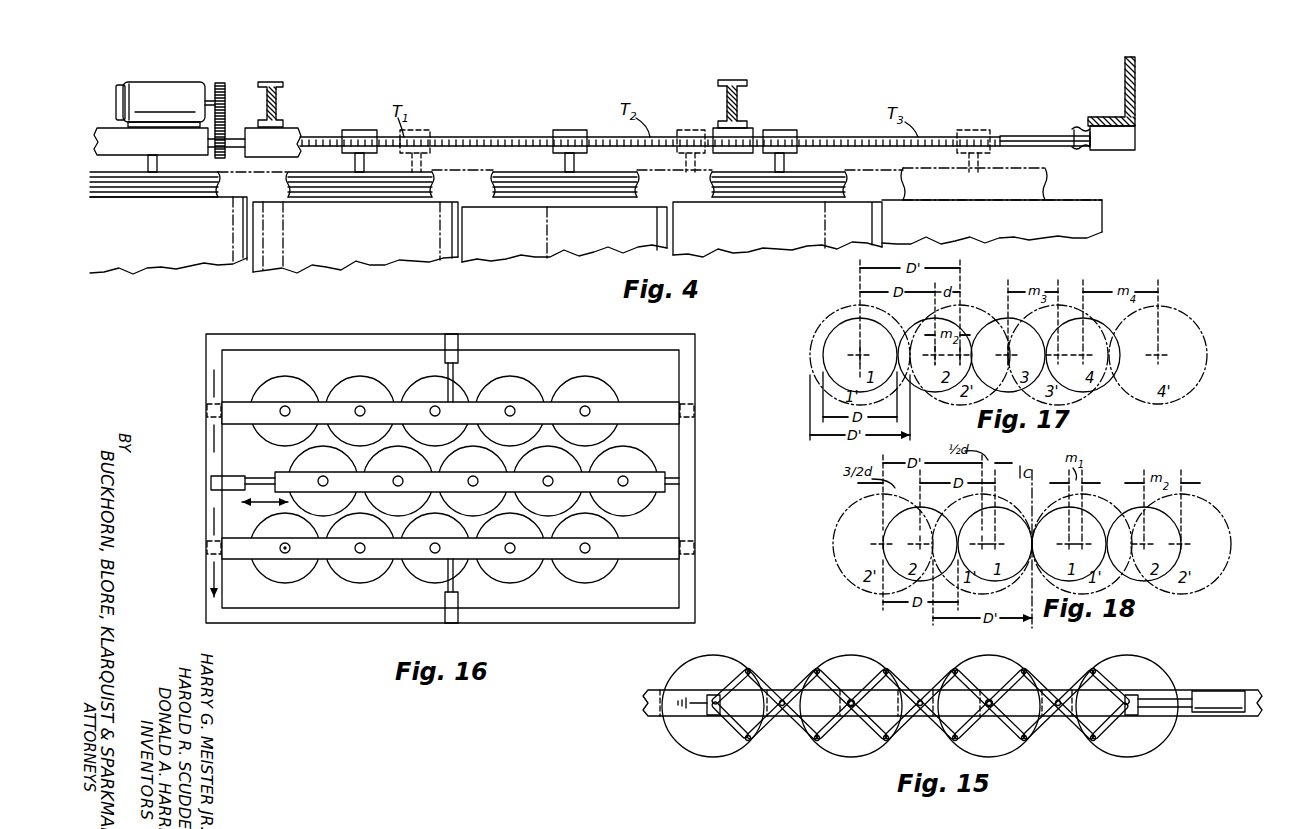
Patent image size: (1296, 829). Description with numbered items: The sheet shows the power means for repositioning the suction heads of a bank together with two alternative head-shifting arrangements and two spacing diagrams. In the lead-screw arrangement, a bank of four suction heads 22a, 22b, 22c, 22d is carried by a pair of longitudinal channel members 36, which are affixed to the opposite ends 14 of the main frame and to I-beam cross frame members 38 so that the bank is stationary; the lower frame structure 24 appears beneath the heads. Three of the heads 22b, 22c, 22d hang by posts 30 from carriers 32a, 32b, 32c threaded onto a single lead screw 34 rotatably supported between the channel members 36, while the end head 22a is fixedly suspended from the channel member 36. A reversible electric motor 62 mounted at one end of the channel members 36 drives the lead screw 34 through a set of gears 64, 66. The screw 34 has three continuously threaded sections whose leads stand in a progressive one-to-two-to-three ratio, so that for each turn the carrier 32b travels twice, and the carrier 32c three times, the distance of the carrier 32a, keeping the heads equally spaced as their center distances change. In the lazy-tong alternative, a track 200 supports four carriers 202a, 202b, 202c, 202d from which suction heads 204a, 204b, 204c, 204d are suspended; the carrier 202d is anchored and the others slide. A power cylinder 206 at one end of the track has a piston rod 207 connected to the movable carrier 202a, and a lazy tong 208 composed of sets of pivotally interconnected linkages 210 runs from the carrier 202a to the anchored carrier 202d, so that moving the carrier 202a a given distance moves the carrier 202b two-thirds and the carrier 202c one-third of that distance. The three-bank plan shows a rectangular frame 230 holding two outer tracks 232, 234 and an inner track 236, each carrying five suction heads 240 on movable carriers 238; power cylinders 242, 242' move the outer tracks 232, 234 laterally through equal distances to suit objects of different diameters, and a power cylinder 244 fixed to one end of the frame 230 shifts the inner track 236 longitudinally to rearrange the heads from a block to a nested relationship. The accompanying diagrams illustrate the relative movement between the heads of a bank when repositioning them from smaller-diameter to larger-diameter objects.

In FIG. 4, the opposite ends of the main frame 14 is at (1136, 90).
In FIG. 4, the suction head 22a is at (145, 193).
In FIG. 4, the suction head 22b is at (337, 194).
In FIG. 4, the suction head 22c is at (540, 197).
In FIG. 4, the suction head 22d is at (745, 196).
In FIG. 4, the frame 24 is at (218, 260).
In FIG. 4, the post 30 is at (786, 160).
In FIG. 4, the carrier 32a is at (355, 130).
In FIG. 4, the carrier 32b is at (566, 130).
In FIG. 4, the carrier 32c is at (783, 130).
In FIG. 4, the lead screw 34 is at (1022, 136).
In FIG. 4, the longitudinal channel member 36 is at (268, 152).
In FIG. 4, the I-beam cross frame member 38 is at (272, 82).
In FIG. 4, the reversible electric motor 62 is at (152, 82).
In FIG. 4, the gear 64 is at (220, 83).
In FIG. 4, the gear 66 is at (228, 139).
In FIG. 15, the track 200 is at (1241, 690).
In FIG. 15, the carrier 202a is at (1131, 693).
In FIG. 15, the carrier 202b is at (988, 690).
In FIG. 15, the carrier 202c is at (849, 690).
In FIG. 15, the carrier 202d is at (708, 696).
In FIG. 15, the suction head 204a is at (1102, 660).
In FIG. 15, the suction head 204b is at (965, 661).
In FIG. 15, the suction head 204c is at (820, 661).
In FIG. 15, the suction head 204d is at (680, 662).
In FIG. 15, the power cylinder 206 is at (1215, 709).
In FIG. 15, the piston rod 207 is at (1163, 698).
In FIG. 15, the lazy tong 208 is at (1040, 731).
In FIG. 15, the linkages 210 is at (995, 722).
In FIG. 16, the rectangular frame 230 is at (290, 628).
In FIG. 16, the outer track 232 is at (528, 406).
In FIG. 16, the outer track 234 is at (632, 559).
In FIG. 16, the inner track 236 is at (658, 493).
In FIG. 16, the movable carrier 238 is at (591, 411).
In FIG. 16, the suction head 240 is at (601, 378).
In FIG. 16, the power cylinder 242 is at (430, 353).
In FIG. 16, the power cylinder 242' is at (430, 602).
In FIG. 16, the power cylinder 244 is at (217, 482).